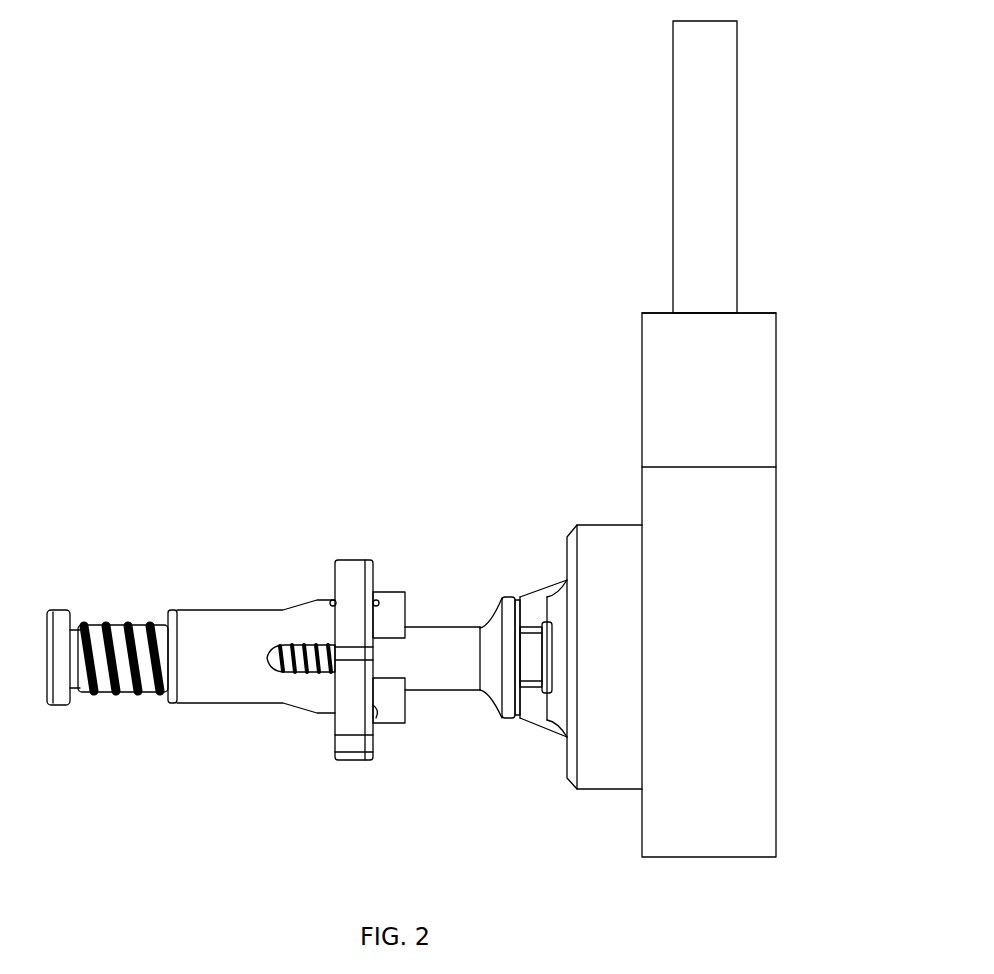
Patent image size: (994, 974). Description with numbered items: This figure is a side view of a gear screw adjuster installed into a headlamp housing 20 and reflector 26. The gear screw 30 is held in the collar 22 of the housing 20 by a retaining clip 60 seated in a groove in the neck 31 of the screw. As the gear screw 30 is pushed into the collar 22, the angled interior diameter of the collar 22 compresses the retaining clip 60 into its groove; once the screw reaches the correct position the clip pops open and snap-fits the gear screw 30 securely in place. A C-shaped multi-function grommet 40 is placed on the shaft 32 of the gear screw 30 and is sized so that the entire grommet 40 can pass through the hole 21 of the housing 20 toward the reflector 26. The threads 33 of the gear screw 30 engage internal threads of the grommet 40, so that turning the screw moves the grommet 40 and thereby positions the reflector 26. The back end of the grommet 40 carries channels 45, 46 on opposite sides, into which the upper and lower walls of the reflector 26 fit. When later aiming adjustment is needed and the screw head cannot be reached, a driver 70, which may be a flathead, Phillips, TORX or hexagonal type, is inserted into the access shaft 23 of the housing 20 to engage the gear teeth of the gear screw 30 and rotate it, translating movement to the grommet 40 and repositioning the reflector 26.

The housing 20 is at (745, 660).
The hole 21 is at (565, 750).
The collar 22 is at (598, 538).
The access shaft 23 is at (760, 313).
The reflector 26 is at (352, 745).
The gear screw 30 is at (445, 682).
The neck 31 is at (560, 575).
The shaft 32 is at (460, 548).
The threads 33 is at (147, 688).
The multi-function grommet 40 is at (227, 687).
The channel 45 is at (335, 585).
The channel 46 is at (375, 712).
The retaining clip 60 is at (533, 612).
The driver 70 is at (718, 130).